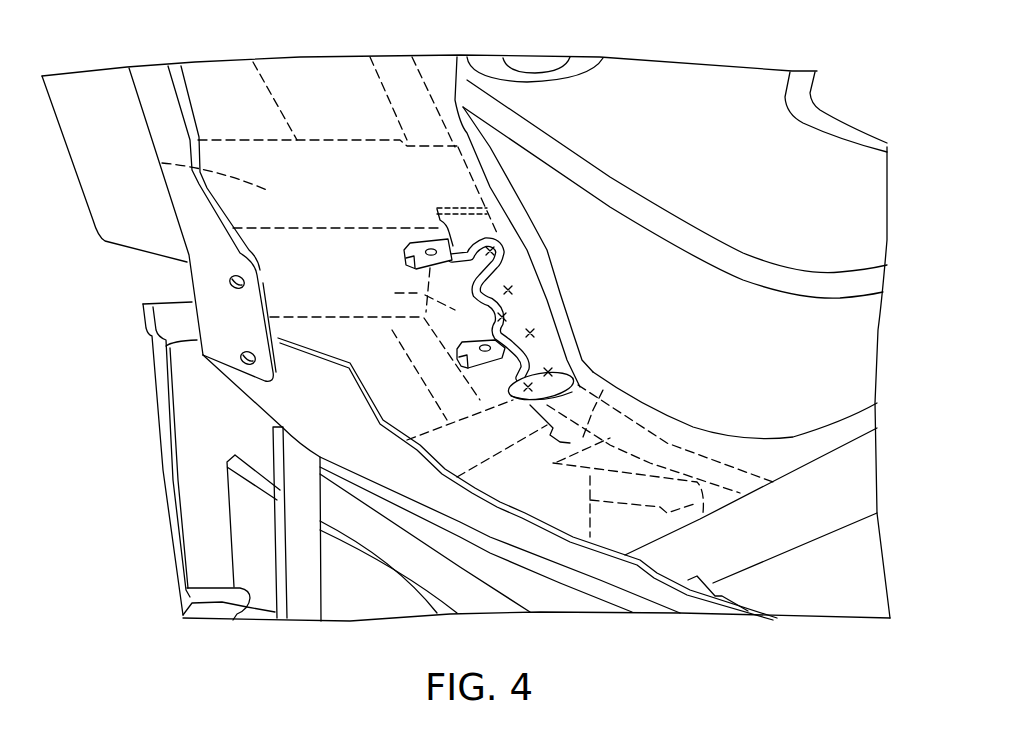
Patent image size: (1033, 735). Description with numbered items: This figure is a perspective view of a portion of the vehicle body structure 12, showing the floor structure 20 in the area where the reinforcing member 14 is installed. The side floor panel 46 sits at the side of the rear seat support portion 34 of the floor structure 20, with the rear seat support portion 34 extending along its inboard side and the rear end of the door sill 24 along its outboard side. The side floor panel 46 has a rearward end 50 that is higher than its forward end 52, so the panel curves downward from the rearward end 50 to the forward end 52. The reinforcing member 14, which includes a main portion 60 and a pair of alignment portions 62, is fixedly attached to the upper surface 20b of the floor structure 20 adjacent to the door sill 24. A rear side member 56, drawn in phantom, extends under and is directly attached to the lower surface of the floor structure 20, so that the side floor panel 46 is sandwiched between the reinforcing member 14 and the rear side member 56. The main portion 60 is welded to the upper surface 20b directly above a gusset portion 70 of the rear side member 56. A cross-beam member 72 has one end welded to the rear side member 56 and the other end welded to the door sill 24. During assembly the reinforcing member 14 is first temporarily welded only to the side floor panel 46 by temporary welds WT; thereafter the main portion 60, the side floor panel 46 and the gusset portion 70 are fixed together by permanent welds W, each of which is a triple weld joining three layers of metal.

The vehicle body structure 12 is at (673, 33).
The reinforcing member 14 is at (518, 313).
The floor structure 20 is at (735, 143).
The upper surface of the floor structure 20b is at (503, 221).
The door sill 24 is at (403, 470).
The rear seat support portion 34 is at (840, 207).
The side floor panel 46 is at (373, 250).
The rearward end 50 is at (253, 160).
The forward end 52 is at (553, 492).
The rear side member 56 is at (423, 298).
The main portion 60 is at (540, 357).
The alignment portions 62 is at (407, 260).
The gusset portion 70 is at (607, 393).
The cross-beam member 72 is at (162, 163).
The permanent welds W is at (495, 252).
The temporary welds WT is at (513, 466).